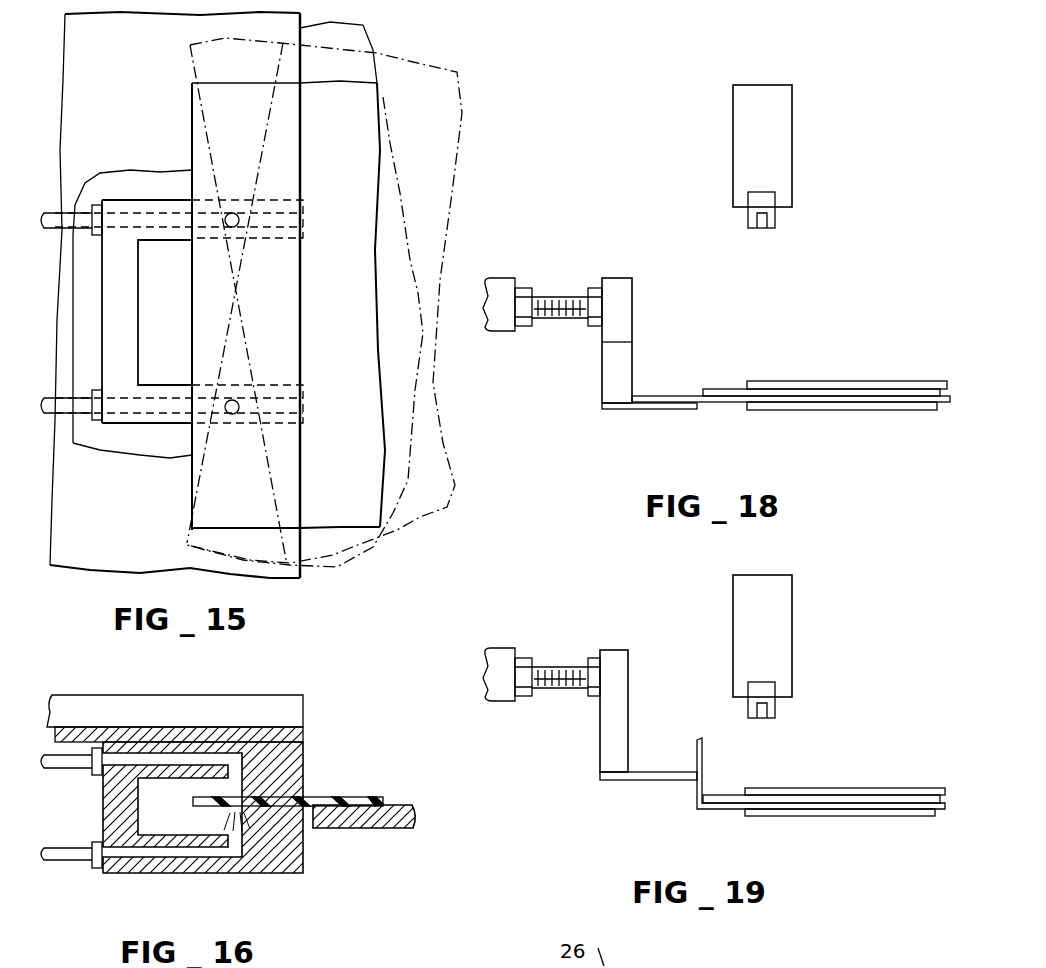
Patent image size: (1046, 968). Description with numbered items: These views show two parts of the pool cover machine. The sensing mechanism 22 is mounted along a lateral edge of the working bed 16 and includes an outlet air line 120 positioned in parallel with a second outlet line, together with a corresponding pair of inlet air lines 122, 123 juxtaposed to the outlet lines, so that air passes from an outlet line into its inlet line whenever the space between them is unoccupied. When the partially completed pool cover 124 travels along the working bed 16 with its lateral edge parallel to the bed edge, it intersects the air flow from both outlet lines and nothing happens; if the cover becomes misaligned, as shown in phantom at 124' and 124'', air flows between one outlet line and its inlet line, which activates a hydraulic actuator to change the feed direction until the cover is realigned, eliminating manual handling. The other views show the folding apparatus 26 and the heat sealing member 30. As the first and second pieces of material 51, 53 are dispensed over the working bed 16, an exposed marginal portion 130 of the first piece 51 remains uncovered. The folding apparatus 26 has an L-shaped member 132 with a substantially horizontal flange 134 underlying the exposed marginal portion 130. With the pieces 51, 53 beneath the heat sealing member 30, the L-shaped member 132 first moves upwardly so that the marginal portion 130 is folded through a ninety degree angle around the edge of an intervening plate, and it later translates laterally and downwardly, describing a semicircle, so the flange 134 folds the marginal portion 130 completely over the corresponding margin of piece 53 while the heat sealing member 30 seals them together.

In FIG. 16, the working bed 16 is at (350, 818).
In FIG. 18, the working bed 16 is at (873, 410).
In FIG. 19, the working bed 16 is at (860, 812).
In FIG. 15, the sensing mechanism 22 is at (130, 184).
In FIG. 16, the sensing mechanism 22 is at (113, 893).
In FIG. 18, the folding apparatus 26 is at (553, 262).
In FIG. 19, the folding apparatus 26 is at (567, 656).
In FIG. 18, the heat sealing member 30 is at (775, 217).
In FIG. 19, the heat sealing member 30 is at (770, 690).
In FIG. 18, the first piece of material 51 is at (835, 397).
In FIG. 19, the first piece of material 51 is at (790, 806).
In FIG. 18, the second piece of material 53 is at (826, 380).
In FIG. 19, the second piece of material 53 is at (828, 788).
In FIG. 16, the outlet air line 120 is at (187, 853).
In FIG. 15, the inlet air line 122 is at (85, 407).
In FIG. 16, the inlet air line 122 is at (80, 768).
In FIG. 15, the inlet air line 123 is at (87, 217).
In FIG. 15, the partially completed pool cover 124 is at (249, 276).
In FIG. 16, the partially completed pool cover 124 is at (293, 792).
In FIG. 15, the misaligned pool cover position 124' is at (274, 301).
In FIG. 15, the misaligned pool cover position 124'' is at (376, 305).
In FIG. 18, the exposed marginal portion 130 is at (678, 394).
In FIG. 19, the exposed marginal portion 130 is at (700, 745).
In FIG. 18, the L-shaped member 132 is at (604, 368).
In FIG. 19, the L-shaped member 132 is at (607, 750).
In FIG. 18, the horizontal flange 134 is at (678, 410).
In FIG. 19, the horizontal flange 134 is at (620, 780).